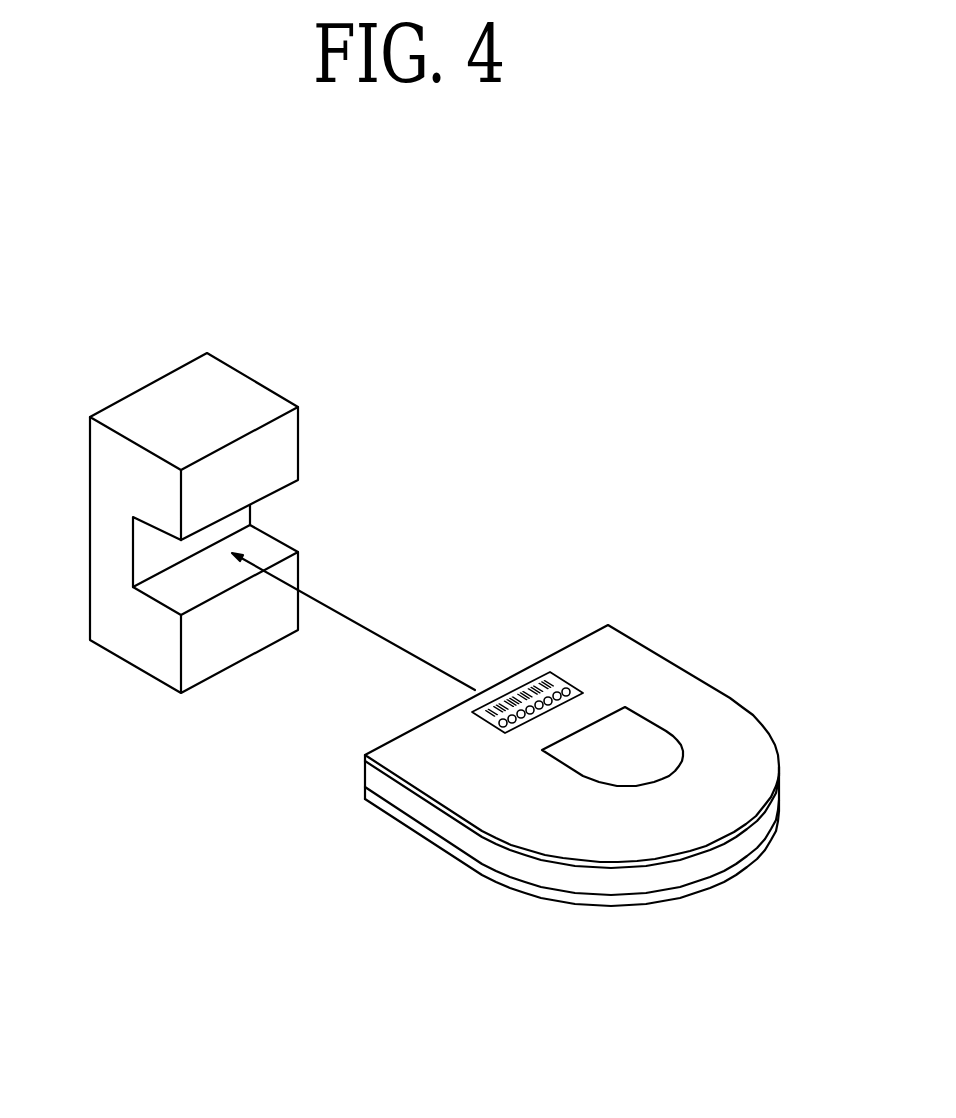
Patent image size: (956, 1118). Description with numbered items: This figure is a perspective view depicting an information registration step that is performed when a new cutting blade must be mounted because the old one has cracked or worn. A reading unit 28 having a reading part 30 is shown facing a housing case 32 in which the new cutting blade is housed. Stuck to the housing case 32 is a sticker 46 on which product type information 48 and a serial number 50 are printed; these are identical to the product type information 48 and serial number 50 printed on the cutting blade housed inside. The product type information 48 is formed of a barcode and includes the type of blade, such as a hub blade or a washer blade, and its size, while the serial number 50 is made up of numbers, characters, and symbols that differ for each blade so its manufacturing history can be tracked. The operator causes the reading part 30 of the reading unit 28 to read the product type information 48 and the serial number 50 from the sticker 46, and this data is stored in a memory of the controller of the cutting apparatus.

The reading unit 28 is at (292, 376).
The reading part 30 is at (272, 497).
The housing case 32 is at (717, 703).
The sticker 46 is at (485, 723).
The product type information 48 is at (512, 697).
The serial number 50 is at (555, 693).